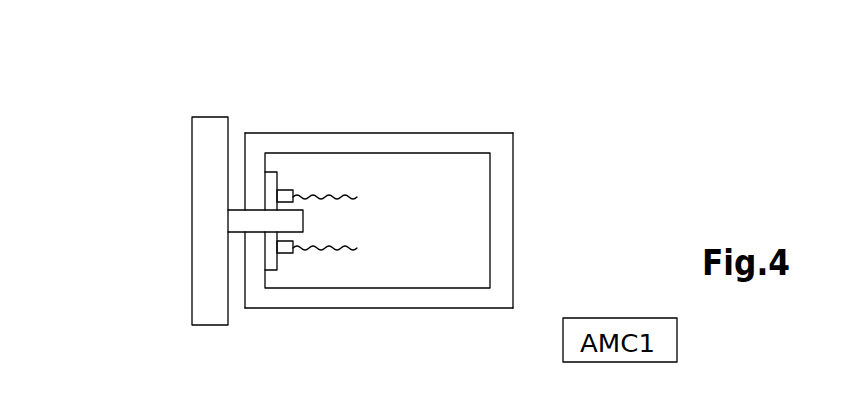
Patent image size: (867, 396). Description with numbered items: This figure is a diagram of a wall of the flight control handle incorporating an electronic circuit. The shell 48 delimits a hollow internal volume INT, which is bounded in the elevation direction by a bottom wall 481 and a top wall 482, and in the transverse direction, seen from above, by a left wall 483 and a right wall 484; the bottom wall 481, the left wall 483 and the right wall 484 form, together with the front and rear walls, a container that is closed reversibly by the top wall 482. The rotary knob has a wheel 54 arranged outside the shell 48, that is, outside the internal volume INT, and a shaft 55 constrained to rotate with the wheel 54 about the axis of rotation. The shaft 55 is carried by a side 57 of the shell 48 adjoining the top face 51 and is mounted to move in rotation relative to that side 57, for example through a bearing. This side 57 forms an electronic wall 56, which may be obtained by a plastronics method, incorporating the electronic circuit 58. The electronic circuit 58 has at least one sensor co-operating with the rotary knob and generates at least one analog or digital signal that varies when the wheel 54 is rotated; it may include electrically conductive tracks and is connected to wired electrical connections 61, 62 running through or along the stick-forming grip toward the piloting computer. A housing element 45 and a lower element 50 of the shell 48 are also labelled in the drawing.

The housing 45 is at (503, 147).
The shell 48 is at (625, 209).
The bottom part of housing 50 is at (515, 297).
The top face 51 is at (485, 131).
The wheel 54 is at (192, 314).
The shaft 55 is at (237, 218).
The electronic wall 56 is at (290, 277).
The side 57 is at (257, 278).
The electronic circuit 58 is at (290, 170).
The wired electrical connection 61 is at (358, 198).
The wired electrical connection 62 is at (358, 250).
The bottom wall 481 is at (375, 308).
The top wall 482 is at (400, 143).
The left wall 483 is at (255, 183).
The right wall 484 is at (500, 255).
The internal volume INT is at (470, 212).